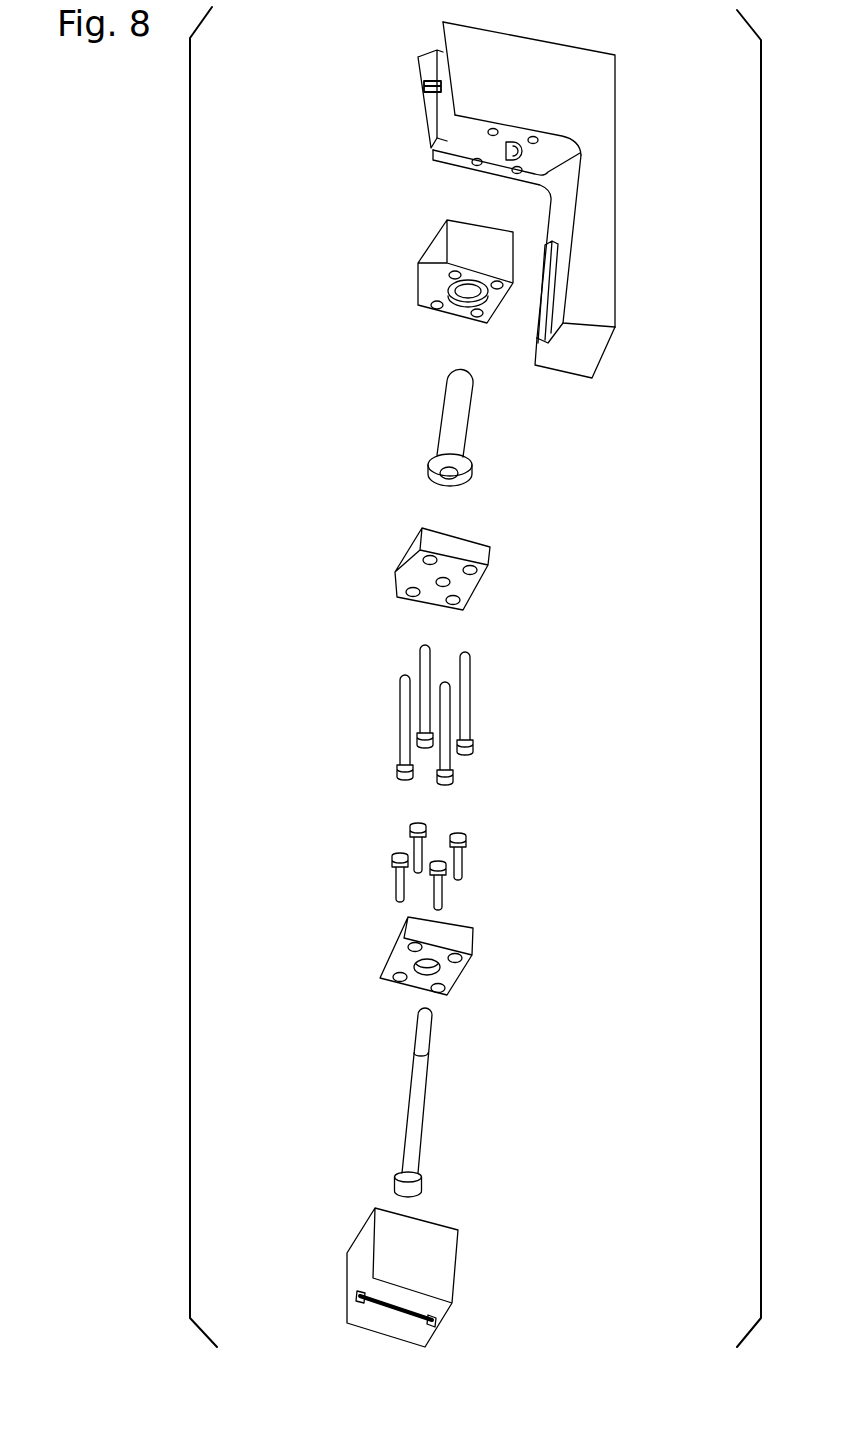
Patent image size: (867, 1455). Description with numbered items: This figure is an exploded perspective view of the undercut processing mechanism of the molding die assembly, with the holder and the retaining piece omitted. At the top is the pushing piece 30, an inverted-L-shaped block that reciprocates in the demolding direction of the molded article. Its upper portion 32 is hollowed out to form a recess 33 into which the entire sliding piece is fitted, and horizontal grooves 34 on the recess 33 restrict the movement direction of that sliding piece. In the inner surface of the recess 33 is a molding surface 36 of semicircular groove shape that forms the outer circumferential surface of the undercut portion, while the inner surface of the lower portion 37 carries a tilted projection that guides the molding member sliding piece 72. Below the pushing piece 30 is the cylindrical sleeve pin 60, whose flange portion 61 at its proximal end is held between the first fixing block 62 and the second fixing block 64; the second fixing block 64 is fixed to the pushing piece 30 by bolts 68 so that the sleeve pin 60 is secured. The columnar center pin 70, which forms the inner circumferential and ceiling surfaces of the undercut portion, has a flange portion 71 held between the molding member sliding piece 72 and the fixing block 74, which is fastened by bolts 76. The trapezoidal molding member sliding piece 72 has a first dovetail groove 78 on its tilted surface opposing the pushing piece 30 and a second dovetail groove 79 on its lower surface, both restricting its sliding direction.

The pushing piece 30 is at (511, 216).
The upper portion 32 is at (642, 48).
The recess 33 is at (438, 117).
The horizontal grooves 34 is at (438, 86).
The molding surface 36 is at (508, 146).
The lower portion 37 is at (648, 398).
The sleeve pin 60 is at (450, 399).
The flange portion 61 is at (435, 456).
The first fixing block 62 is at (438, 259).
The second fixing block 64 is at (417, 553).
The bolts 68 is at (425, 702).
The center pin 70 is at (415, 1093).
The flange portion 71 is at (405, 1175).
The molding member sliding piece 72 is at (357, 1267).
The fixing block 74 is at (402, 943).
The bolts 76 is at (418, 853).
The first dovetail groove 78 is at (432, 1320).
The second dovetail groove 79 is at (360, 1299).